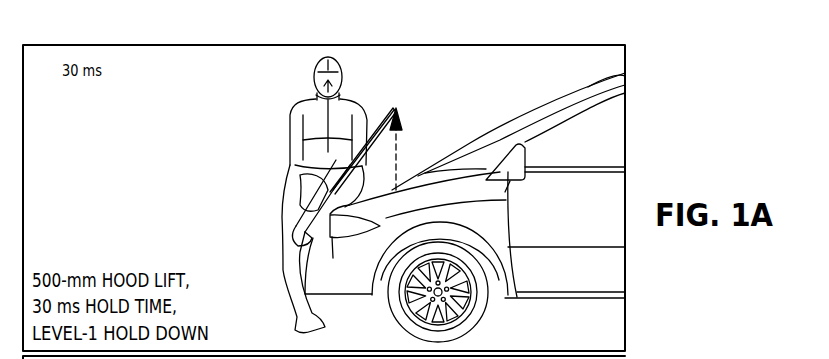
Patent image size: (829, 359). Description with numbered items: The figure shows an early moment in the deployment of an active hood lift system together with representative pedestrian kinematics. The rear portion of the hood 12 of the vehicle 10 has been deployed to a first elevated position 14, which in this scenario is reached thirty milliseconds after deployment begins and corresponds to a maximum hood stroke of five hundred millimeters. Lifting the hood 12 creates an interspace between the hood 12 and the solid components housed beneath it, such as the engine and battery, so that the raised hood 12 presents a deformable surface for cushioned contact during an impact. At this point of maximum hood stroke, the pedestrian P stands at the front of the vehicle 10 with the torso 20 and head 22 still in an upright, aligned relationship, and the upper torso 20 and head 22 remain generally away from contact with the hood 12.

The vehicle 10 is at (549, 88).
The hood 12 is at (394, 106).
The first elevated position 14 is at (398, 147).
The torso 20 is at (293, 134).
The head 22 is at (316, 64).